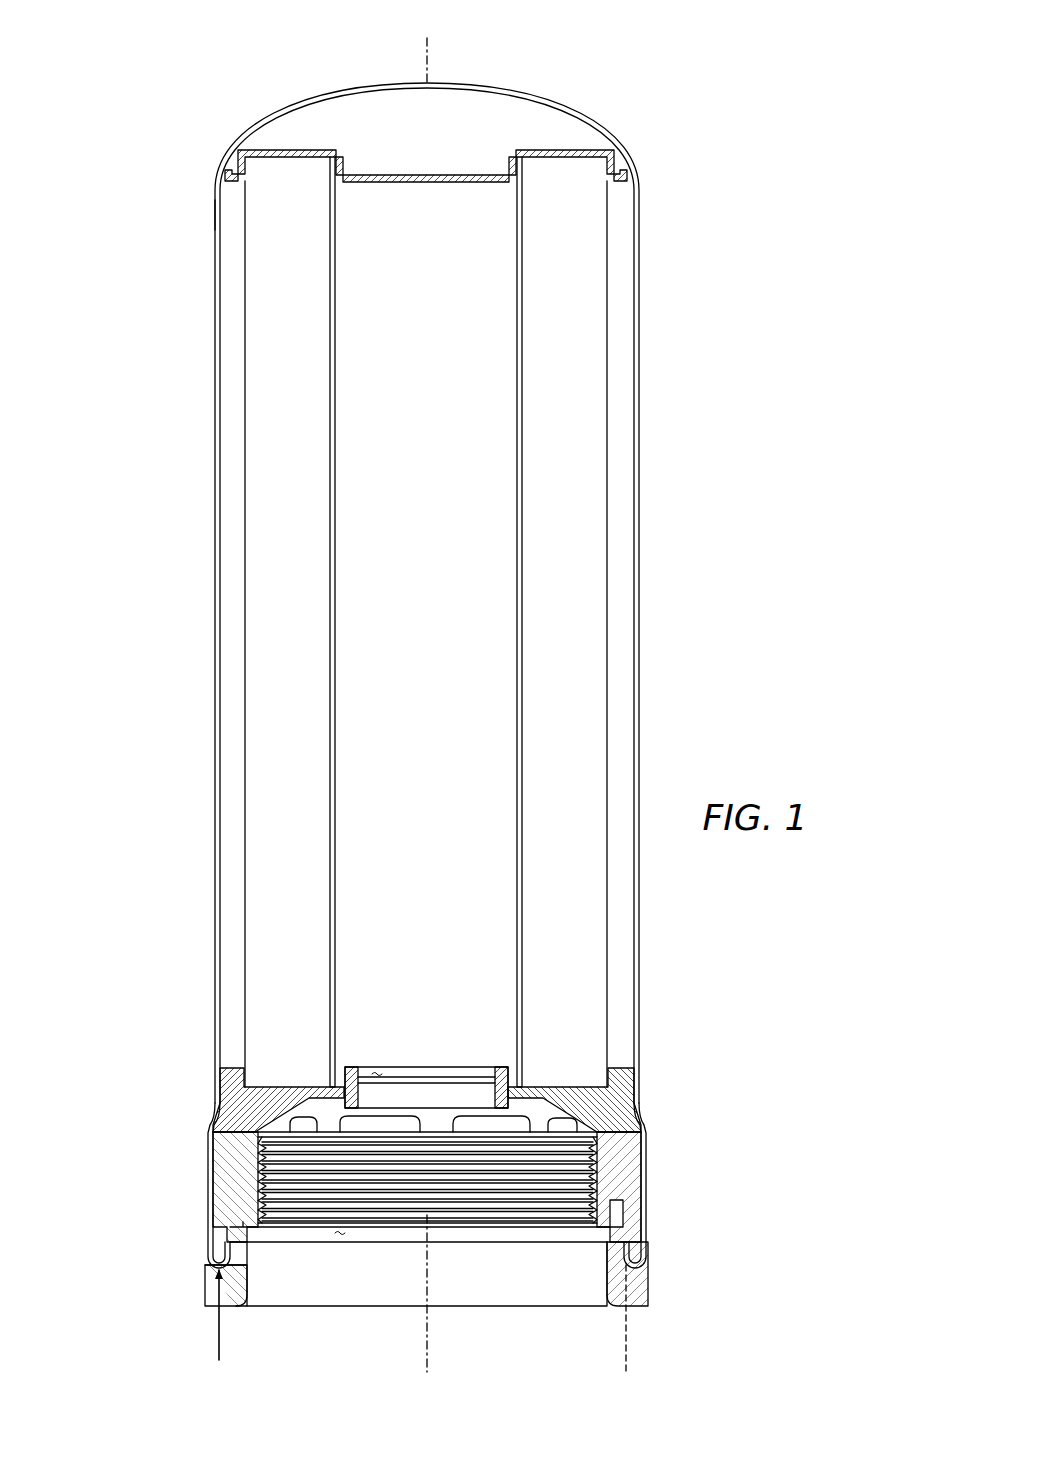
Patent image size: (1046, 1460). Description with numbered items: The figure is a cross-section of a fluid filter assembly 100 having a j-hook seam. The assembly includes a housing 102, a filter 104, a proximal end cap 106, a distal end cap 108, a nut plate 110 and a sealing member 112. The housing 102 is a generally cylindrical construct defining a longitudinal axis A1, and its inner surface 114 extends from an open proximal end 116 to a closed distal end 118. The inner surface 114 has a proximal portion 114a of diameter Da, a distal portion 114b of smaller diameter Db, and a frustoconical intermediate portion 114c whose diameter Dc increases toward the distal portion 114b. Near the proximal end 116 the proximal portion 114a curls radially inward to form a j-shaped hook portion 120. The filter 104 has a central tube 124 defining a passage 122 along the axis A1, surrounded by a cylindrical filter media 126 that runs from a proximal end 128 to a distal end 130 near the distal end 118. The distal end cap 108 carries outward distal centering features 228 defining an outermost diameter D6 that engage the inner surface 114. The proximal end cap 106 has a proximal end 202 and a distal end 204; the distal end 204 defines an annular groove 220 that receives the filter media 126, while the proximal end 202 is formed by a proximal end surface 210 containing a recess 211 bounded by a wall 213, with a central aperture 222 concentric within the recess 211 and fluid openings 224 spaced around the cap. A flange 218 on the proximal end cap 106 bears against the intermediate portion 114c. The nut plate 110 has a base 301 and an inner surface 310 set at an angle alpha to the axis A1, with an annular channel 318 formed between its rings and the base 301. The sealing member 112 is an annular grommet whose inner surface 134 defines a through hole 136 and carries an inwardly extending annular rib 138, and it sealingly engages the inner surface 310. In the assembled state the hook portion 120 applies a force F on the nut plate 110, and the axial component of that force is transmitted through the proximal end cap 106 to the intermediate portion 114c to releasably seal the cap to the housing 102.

The filter assembly 100 is at (768, 250).
The housing 102 is at (636, 188).
The filter 104 is at (238, 485).
The proximal end cap 106 is at (535, 1100).
The distal end cap 108 is at (594, 150).
The nut plate 110 is at (222, 1200).
The sealing member 112 is at (450, 1100).
The inner surface 114 is at (636, 558).
The proximal portion 114a is at (648, 1190).
The distal portion 114b is at (636, 1020).
The intermediate portion 114c is at (640, 1118).
The proximal end 116 is at (636, 1272).
The distal end 118 is at (548, 98).
The hook portion 120 is at (208, 1258).
The passage 122 is at (373, 380).
The central tube 124 is at (323, 697).
The filter media 126 is at (243, 590).
The proximal end 128 is at (288, 1140).
The distal end 130 is at (290, 150).
The inner surface 134 is at (380, 1072).
The through hole 136 is at (500, 1106).
The annular rib 138 is at (396, 1226).
The proximal end 202 is at (644, 1152).
The distal end 204 is at (575, 1090).
The proximal end surface 210 is at (232, 1133).
The recess 211 is at (541, 1122).
The wall 213 is at (288, 1140).
The flange 218 is at (642, 1135).
The annular groove 220 is at (258, 1085).
The central aperture 222 is at (358, 1075).
The fluid openings 224 is at (395, 1122).
The distal centering features 228 is at (220, 195).
The base 301 is at (243, 1143).
The inner surface 310 is at (333, 1240).
The channel 318 is at (617, 1233).
The longitudinal axis A1 is at (425, 693).
The outermost diameter D6 is at (632, 173).
The diameter Da is at (208, 1175).
The diameter Db is at (215, 1040).
The increasing diameter Dc is at (215, 1115).
The force F is at (214, 1328).
The angle alpha is at (430, 1335).